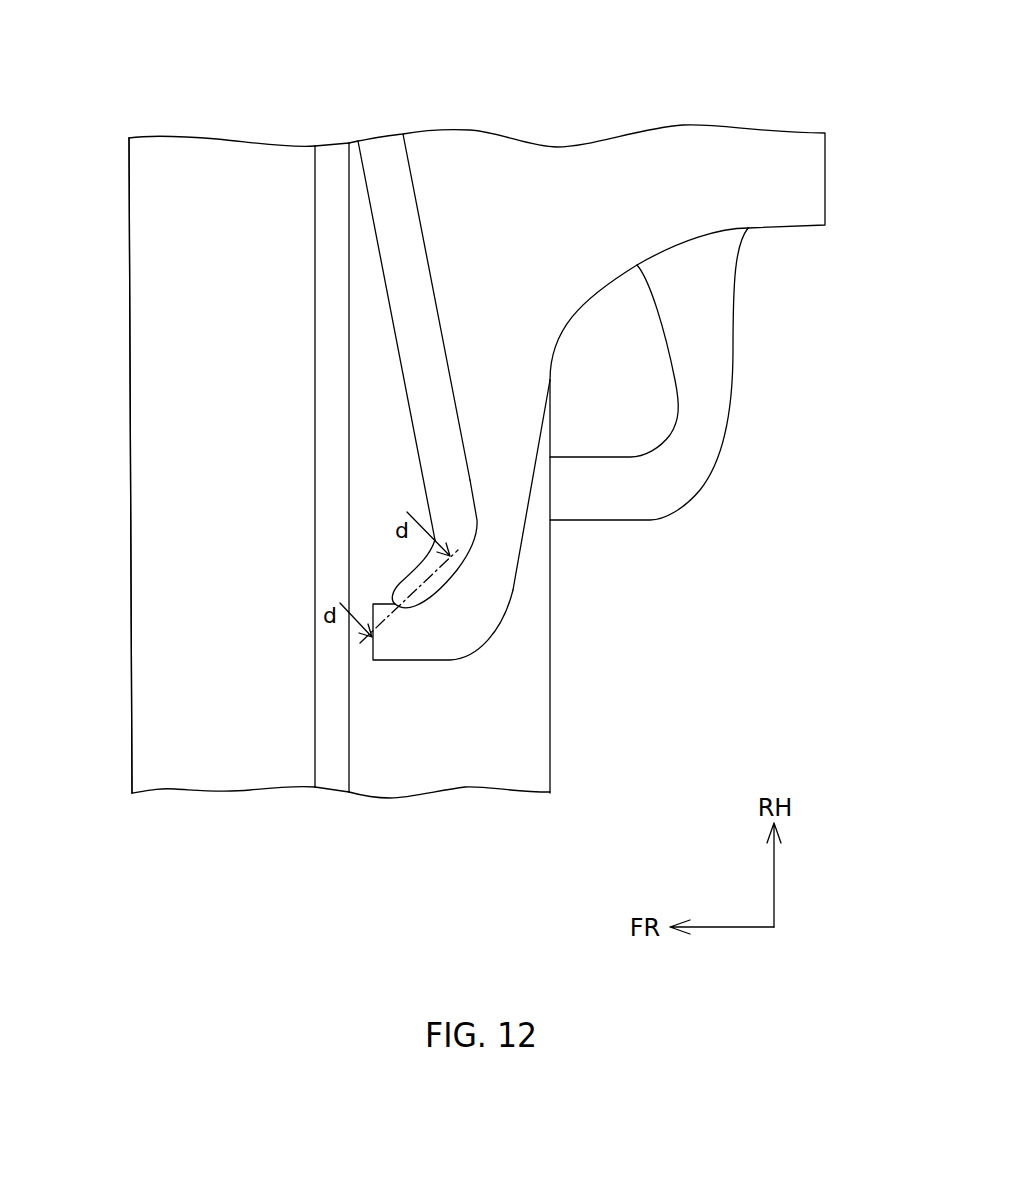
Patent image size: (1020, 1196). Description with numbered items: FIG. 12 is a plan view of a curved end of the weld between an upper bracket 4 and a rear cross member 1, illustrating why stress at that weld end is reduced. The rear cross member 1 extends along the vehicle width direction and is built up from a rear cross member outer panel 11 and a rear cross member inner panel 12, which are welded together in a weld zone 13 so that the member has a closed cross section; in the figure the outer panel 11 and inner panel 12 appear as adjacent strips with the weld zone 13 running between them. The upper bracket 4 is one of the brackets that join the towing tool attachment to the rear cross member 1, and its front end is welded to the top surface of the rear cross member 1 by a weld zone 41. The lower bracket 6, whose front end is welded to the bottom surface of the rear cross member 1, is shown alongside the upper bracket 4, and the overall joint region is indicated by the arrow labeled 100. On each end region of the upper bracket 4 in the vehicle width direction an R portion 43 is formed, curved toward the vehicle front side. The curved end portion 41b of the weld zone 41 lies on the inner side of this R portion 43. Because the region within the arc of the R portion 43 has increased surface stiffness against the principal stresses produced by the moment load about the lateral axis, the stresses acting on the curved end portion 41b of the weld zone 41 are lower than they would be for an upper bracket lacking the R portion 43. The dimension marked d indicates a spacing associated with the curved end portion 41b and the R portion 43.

The rear cross member 1 is at (130, 755).
The upper bracket 4 is at (805, 183).
The lower bracket 6 is at (718, 370).
The rear cross member outer panel 11 is at (153, 215).
The rear cross member inner panel 12 is at (530, 740).
The weld zone 13 is at (333, 160).
The weld zone 41 is at (522, 312).
The curved end portion 41b is at (450, 573).
The R portion 43 is at (470, 615).
The joint structure 100 is at (724, 420).